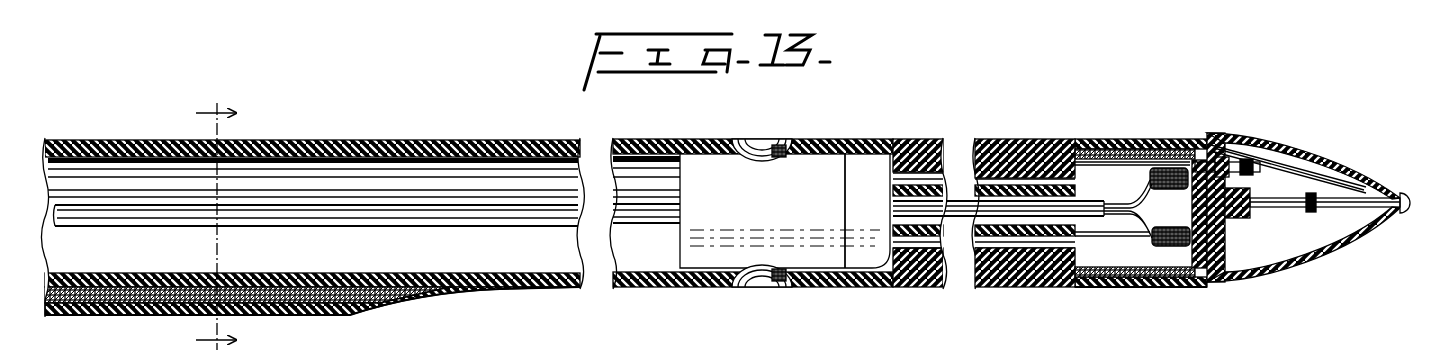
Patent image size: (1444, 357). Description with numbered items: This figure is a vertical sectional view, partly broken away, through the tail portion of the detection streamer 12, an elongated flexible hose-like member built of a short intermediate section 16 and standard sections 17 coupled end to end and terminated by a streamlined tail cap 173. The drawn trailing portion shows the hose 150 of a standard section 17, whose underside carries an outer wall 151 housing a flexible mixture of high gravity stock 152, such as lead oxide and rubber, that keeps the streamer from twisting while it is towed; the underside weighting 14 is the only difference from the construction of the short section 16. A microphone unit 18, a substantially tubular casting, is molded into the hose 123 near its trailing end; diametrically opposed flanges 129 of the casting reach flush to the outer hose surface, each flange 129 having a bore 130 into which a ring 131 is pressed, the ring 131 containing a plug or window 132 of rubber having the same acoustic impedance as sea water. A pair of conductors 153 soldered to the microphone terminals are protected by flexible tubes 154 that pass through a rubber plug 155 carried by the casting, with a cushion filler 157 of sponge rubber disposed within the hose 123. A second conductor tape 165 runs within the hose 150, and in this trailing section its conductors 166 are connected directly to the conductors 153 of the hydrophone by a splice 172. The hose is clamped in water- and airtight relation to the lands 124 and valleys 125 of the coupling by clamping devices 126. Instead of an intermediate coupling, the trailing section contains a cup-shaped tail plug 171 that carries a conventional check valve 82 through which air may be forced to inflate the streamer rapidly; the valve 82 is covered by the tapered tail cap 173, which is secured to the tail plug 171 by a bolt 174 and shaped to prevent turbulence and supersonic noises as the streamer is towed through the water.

The detection streamer 12 is at (614, 139).
The tool body 14 is at (350, 310).
The short intermediate section 16 is at (423, 229).
The standard section 17 is at (557, 288).
The microphone unit 18 is at (785, 211).
The check valve 82 is at (1237, 160).
The hose 123 is at (935, 345).
The lands 124 is at (1077, 140).
The valleys 125 is at (1148, 285).
The clamping devices 126 is at (1112, 190).
The flanges 129 is at (737, 142).
The bore 130 is at (787, 140).
The ring 131 is at (745, 140).
The plug or window 132 is at (763, 140).
The hose 150 is at (507, 288).
The outer wall 151 is at (119, 317).
The high gravity stock 152 is at (68, 312).
The conductors 153 is at (955, 170).
The flexible tubes 154 is at (906, 140).
The rubber plug 155 is at (867, 163).
The cushion filler 157 is at (1030, 140).
The second conductor tape 165 is at (310, 222).
The conductors 166 is at (1127, 198).
The tail plug 171 is at (1222, 258).
The splice 172 is at (1180, 188).
The tail cap 173 is at (1318, 152).
The bolt 174 is at (1305, 211).